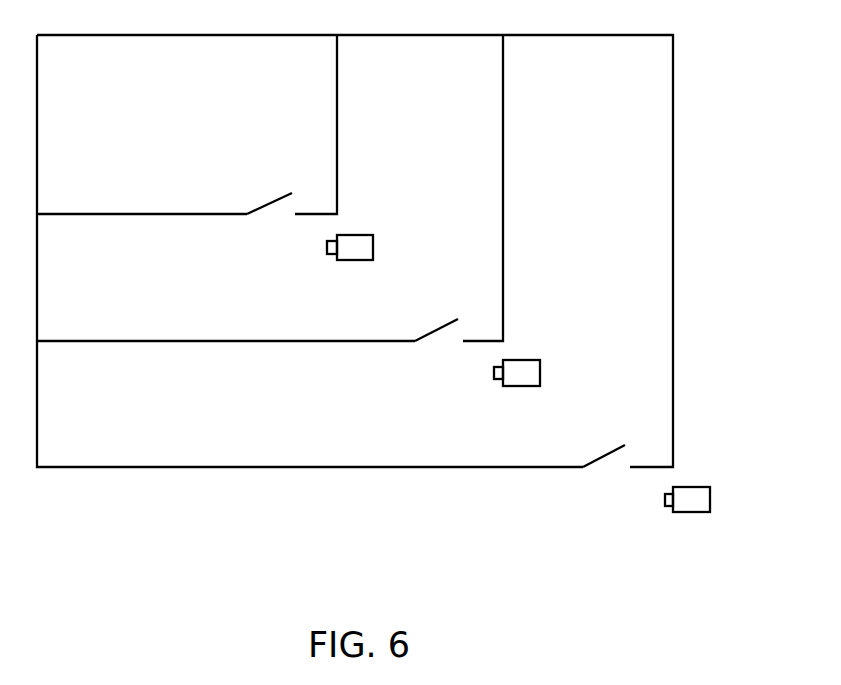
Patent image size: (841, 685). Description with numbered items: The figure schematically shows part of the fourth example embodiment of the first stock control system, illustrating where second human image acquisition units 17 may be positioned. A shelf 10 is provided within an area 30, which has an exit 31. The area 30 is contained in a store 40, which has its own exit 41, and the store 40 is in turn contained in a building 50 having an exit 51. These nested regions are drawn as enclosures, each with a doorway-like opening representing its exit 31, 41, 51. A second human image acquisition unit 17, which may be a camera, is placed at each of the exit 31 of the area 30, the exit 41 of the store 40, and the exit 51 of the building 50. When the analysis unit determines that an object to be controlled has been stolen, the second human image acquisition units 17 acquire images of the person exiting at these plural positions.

The shelf 10 is at (60, 82).
The second human image acquisition unit 17 is at (357, 247).
The area 30 is at (316, 125).
The exit 31 is at (278, 218).
The store 40 is at (488, 192).
The exit 41 is at (442, 342).
The building 50 is at (657, 330).
The exit 51 is at (610, 467).